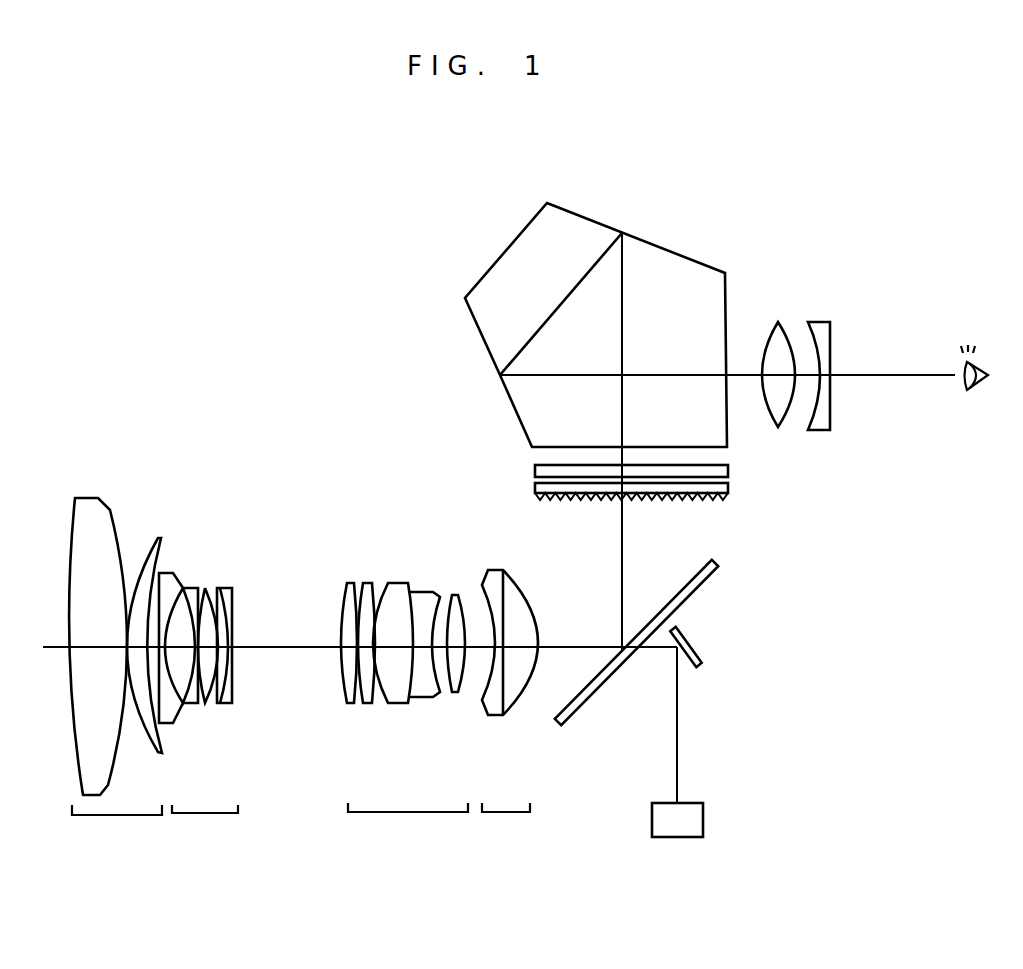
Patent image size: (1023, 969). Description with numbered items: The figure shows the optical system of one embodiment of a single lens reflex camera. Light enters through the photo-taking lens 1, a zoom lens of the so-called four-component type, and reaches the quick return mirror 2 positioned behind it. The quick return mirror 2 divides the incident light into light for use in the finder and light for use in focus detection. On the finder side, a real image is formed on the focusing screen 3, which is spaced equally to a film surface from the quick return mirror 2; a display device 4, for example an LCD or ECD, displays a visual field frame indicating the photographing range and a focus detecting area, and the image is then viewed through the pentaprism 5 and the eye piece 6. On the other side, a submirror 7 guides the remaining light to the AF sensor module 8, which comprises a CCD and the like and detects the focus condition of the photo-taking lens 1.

The photo-taking lens 1 is at (465, 475).
The quick return mirror 2 is at (697, 583).
The focusing screen 3 is at (728, 486).
The display device 4 is at (535, 470).
The pentaprism 5 is at (527, 242).
The eye piece 6 is at (835, 288).
The submirror 7 is at (680, 628).
The AF sensor module 8 is at (700, 812).